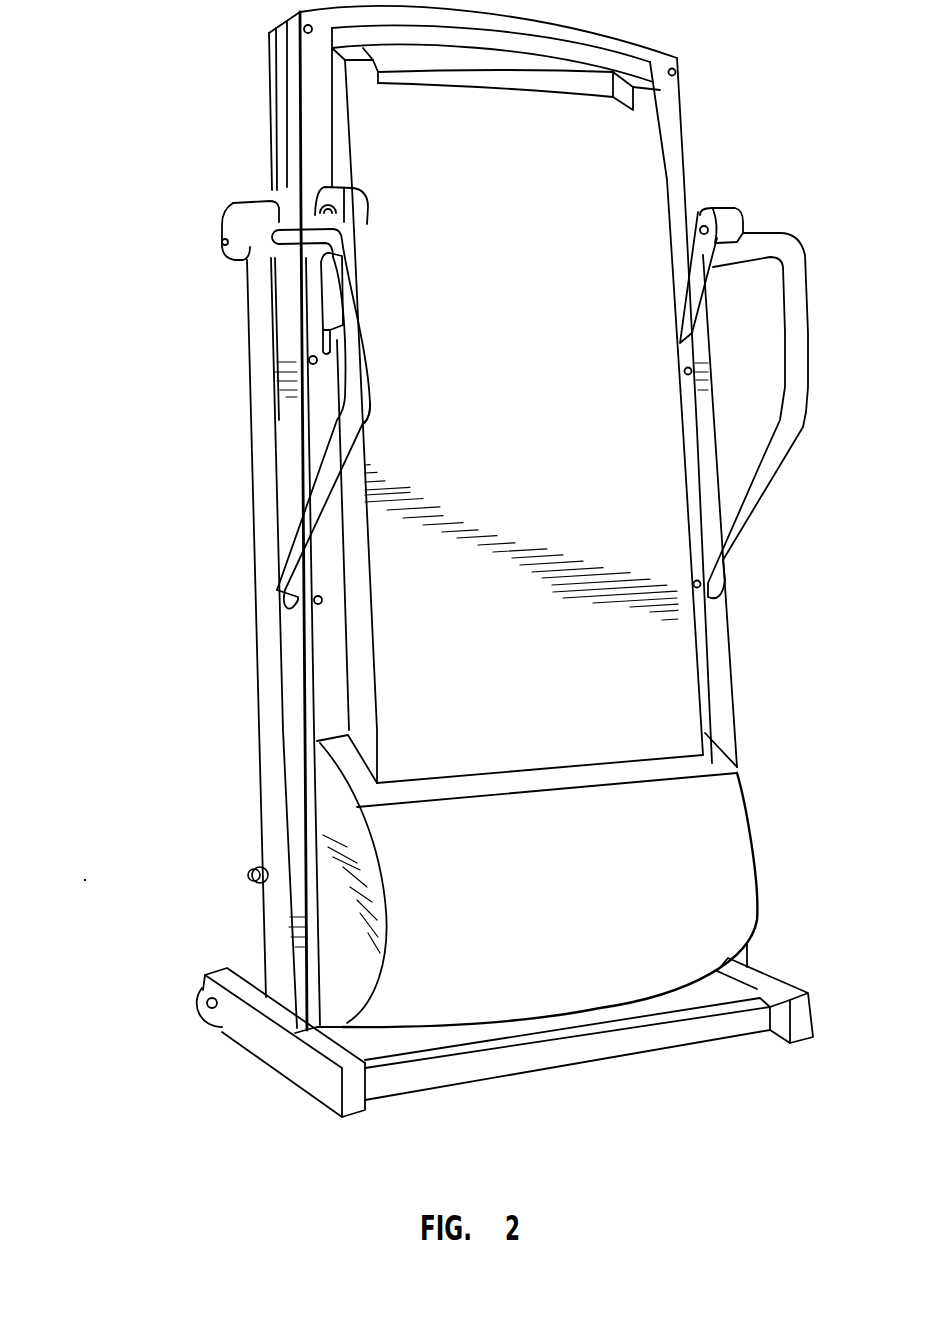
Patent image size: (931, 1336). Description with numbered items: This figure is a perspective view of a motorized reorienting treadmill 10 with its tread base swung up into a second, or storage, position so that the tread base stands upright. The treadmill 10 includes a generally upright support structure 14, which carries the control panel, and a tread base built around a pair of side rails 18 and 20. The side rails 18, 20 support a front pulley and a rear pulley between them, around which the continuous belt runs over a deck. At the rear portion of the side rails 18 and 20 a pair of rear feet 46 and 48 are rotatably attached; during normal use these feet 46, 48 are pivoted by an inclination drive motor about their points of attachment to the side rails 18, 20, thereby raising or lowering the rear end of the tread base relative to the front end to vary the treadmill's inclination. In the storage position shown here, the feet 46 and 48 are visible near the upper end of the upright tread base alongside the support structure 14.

The reorienting treadmill 10 is at (215, 424).
The upright support structure 14 is at (262, 721).
The side rail 18 is at (280, 117).
The side rail 20 is at (683, 143).
The rear foot 46 is at (333, 198).
The rear foot 48 is at (720, 234).